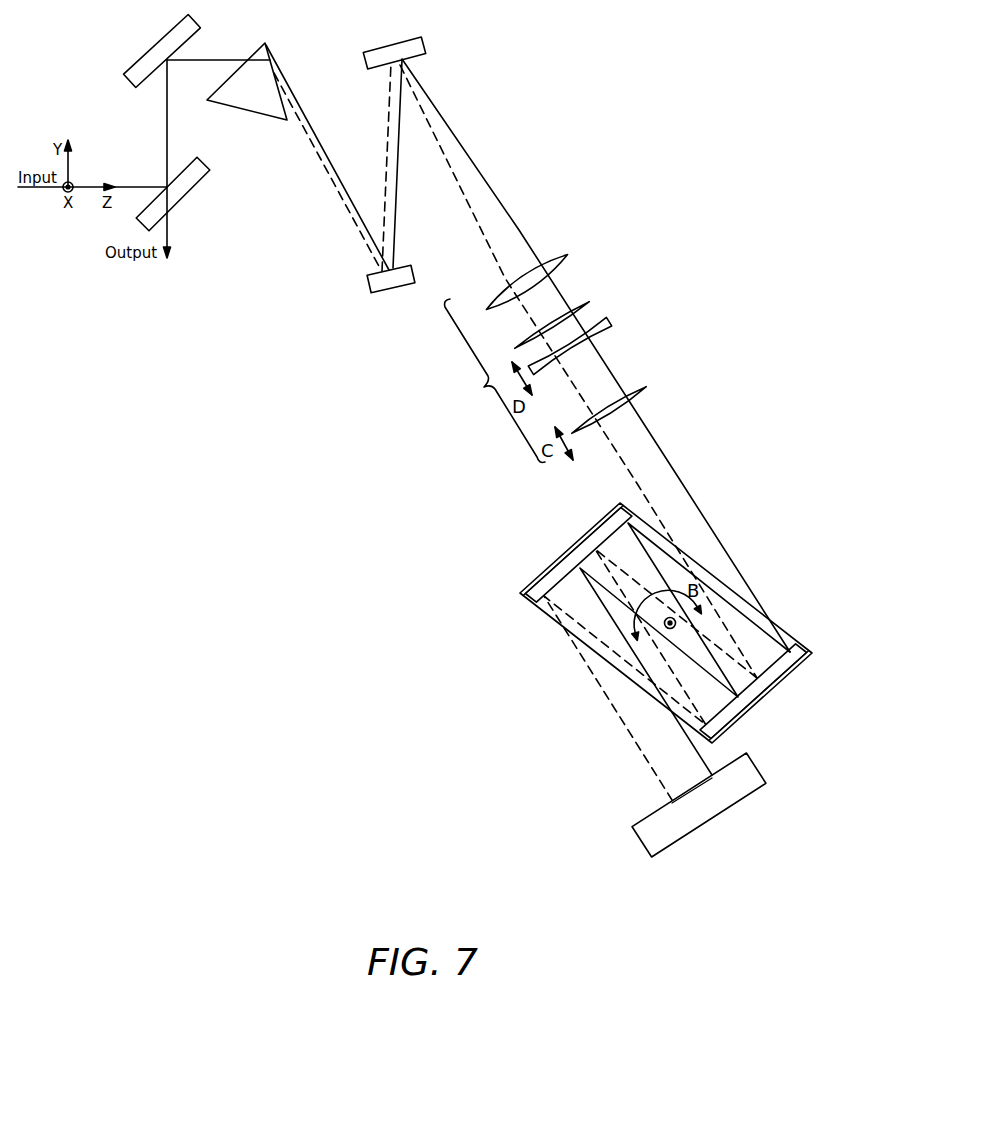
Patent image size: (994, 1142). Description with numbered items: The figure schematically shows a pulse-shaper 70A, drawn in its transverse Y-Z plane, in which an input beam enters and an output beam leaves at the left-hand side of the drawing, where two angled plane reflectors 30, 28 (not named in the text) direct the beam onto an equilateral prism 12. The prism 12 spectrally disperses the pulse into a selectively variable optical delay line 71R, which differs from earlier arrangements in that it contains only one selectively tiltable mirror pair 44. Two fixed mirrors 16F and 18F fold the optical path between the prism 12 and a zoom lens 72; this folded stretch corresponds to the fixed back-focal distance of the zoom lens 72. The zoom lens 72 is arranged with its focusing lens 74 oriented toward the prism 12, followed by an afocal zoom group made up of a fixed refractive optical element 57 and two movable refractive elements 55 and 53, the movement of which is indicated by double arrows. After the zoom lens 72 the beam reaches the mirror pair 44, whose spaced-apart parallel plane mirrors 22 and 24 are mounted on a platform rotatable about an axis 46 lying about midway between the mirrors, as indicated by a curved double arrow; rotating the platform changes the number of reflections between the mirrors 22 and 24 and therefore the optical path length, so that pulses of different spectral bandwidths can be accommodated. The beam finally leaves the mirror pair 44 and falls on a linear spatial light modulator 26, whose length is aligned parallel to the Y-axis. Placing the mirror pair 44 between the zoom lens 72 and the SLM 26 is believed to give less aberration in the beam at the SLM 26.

The input mirror 30 is at (147, 66).
The output mirror / beam splitter 28 is at (193, 182).
The prism 12 is at (268, 115).
The fixed mirror 18F is at (412, 59).
The fixed mirror 16F is at (367, 277).
The focusing lens 74 is at (569, 257).
The fixed refractive optical element 57 is at (590, 301).
The movable refractive element 55 is at (612, 320).
The movable refractive element 53 is at (647, 388).
The zoom lens 72 is at (495, 380).
The selectively variable optical delay line 71R is at (730, 285).
The mirror pair 44 is at (538, 617).
The plane mirror 22 is at (588, 560).
The plane mirror 24 is at (744, 718).
The axis 46 is at (677, 622).
The linear spatial light modulator 26 is at (690, 790).
The pulse-shaper 70A is at (222, 735).